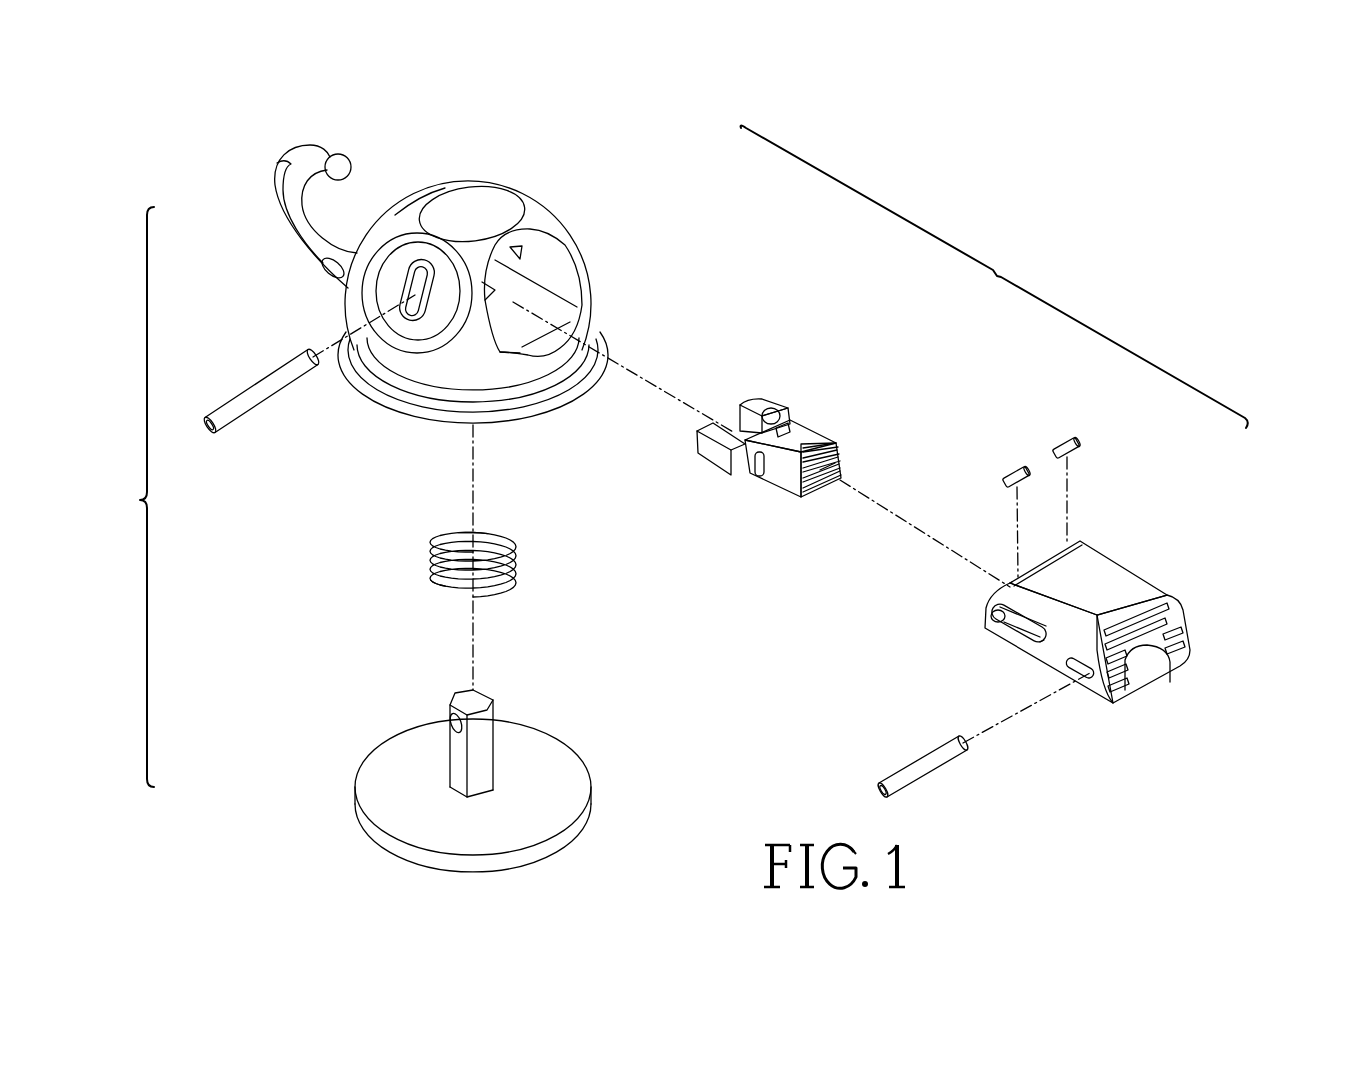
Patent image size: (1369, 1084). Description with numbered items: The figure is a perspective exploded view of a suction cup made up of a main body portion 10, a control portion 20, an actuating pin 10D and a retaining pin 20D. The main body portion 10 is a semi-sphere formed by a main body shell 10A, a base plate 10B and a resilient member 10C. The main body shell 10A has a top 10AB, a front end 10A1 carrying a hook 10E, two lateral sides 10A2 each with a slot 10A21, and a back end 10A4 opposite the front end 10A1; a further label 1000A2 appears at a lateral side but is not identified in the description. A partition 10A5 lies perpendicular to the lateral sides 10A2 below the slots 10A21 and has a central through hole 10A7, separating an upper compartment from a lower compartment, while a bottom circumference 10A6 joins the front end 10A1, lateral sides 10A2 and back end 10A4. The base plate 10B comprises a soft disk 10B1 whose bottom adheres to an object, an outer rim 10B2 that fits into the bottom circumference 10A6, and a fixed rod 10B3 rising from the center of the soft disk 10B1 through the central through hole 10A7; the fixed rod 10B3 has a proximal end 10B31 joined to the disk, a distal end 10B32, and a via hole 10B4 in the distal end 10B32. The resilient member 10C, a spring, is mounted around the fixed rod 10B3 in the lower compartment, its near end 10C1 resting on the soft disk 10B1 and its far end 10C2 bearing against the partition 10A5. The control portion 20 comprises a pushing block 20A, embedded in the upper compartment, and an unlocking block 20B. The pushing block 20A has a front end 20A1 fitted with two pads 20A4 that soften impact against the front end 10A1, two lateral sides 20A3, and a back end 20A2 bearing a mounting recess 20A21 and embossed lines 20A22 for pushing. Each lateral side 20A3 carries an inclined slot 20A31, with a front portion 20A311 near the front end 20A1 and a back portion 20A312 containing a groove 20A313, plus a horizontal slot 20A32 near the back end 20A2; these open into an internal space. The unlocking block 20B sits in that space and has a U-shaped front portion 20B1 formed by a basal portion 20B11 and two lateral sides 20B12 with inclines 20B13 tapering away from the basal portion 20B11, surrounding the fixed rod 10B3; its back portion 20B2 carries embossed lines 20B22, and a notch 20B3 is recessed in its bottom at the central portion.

The main body portion 10 is at (127, 497).
The control portion 20 is at (994, 277).
The main body shell 10A is at (533, 209).
The front end 10A1 is at (417, 190).
The top 10AB is at (485, 189).
The lateral sides 10A2 is at (543, 240).
The central through hole 10A7 is at (553, 250).
The partition 10A5 is at (556, 300).
The back end 10A4 is at (508, 362).
The bottom circumference 10A6 is at (430, 422).
The left window rim 1000A2 is at (392, 271).
The slot 10A21 is at (414, 293).
The hook 10E is at (282, 163).
The actuating pin 10D is at (265, 378).
The resilient member 10C is at (438, 570).
The near end 10C1 is at (440, 597).
The far end 10C2 is at (477, 528).
The base plate 10B is at (350, 752).
The soft disk 10B1 is at (565, 807).
The outer rim 10B2 is at (548, 847).
The fixed rod 10B3 is at (482, 735).
The proximal end 10B31 is at (478, 790).
The distal end 10B32 is at (478, 701).
The via hole 10B4 is at (455, 720).
The unlocking block 20B is at (806, 418).
The front portion 20B1 is at (743, 402).
The basal portion 20B11 is at (776, 404).
The lateral sides 20B12 is at (762, 400).
The inclines 20B13 is at (700, 432).
The back portion 20B2 is at (822, 448).
The embossed lines 20B22 is at (836, 480).
The notch 20B3 is at (758, 472).
The pushing block 20A is at (1142, 565).
The front end 20A1 is at (1013, 582).
The back end 20A2 is at (1190, 623).
The mounting recess 20A21 is at (1133, 665).
The embossed lines 20A22 is at (1173, 600).
The lateral sides 20A3 is at (1053, 662).
The inclined slot 20A31 is at (1020, 620).
The front portion 20A311 is at (990, 622).
The back portion 20A312 is at (1003, 600).
The groove 20A313 is at (1043, 640).
The horizontal slot 20A32 is at (1082, 688).
The pads 20A4 is at (1020, 466).
The retaining pin 20D is at (890, 780).